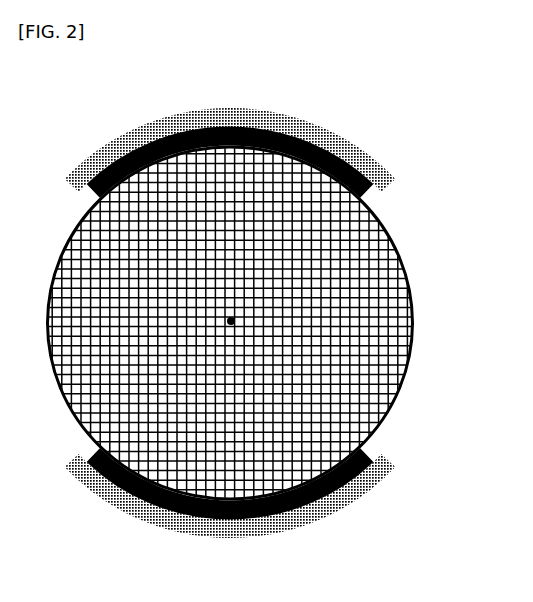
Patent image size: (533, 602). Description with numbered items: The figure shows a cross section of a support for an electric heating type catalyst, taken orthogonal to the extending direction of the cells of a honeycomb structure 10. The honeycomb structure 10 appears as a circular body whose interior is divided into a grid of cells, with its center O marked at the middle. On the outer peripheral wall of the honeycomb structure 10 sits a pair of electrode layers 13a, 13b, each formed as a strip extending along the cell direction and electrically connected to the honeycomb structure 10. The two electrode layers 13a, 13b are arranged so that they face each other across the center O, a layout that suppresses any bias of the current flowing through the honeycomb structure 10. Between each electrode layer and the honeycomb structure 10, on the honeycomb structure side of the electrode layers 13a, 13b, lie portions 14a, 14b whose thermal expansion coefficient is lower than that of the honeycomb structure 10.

The honeycomb structure 10 is at (395, 240).
The electrode layer 13a is at (282, 118).
The electrode layer 13b is at (337, 508).
The portion having a lower thermal expansion coefficient 14a is at (365, 188).
The portion having a lower thermal expansion coefficient 14b is at (373, 458).
The center of the honeycomb structure O is at (235, 322).